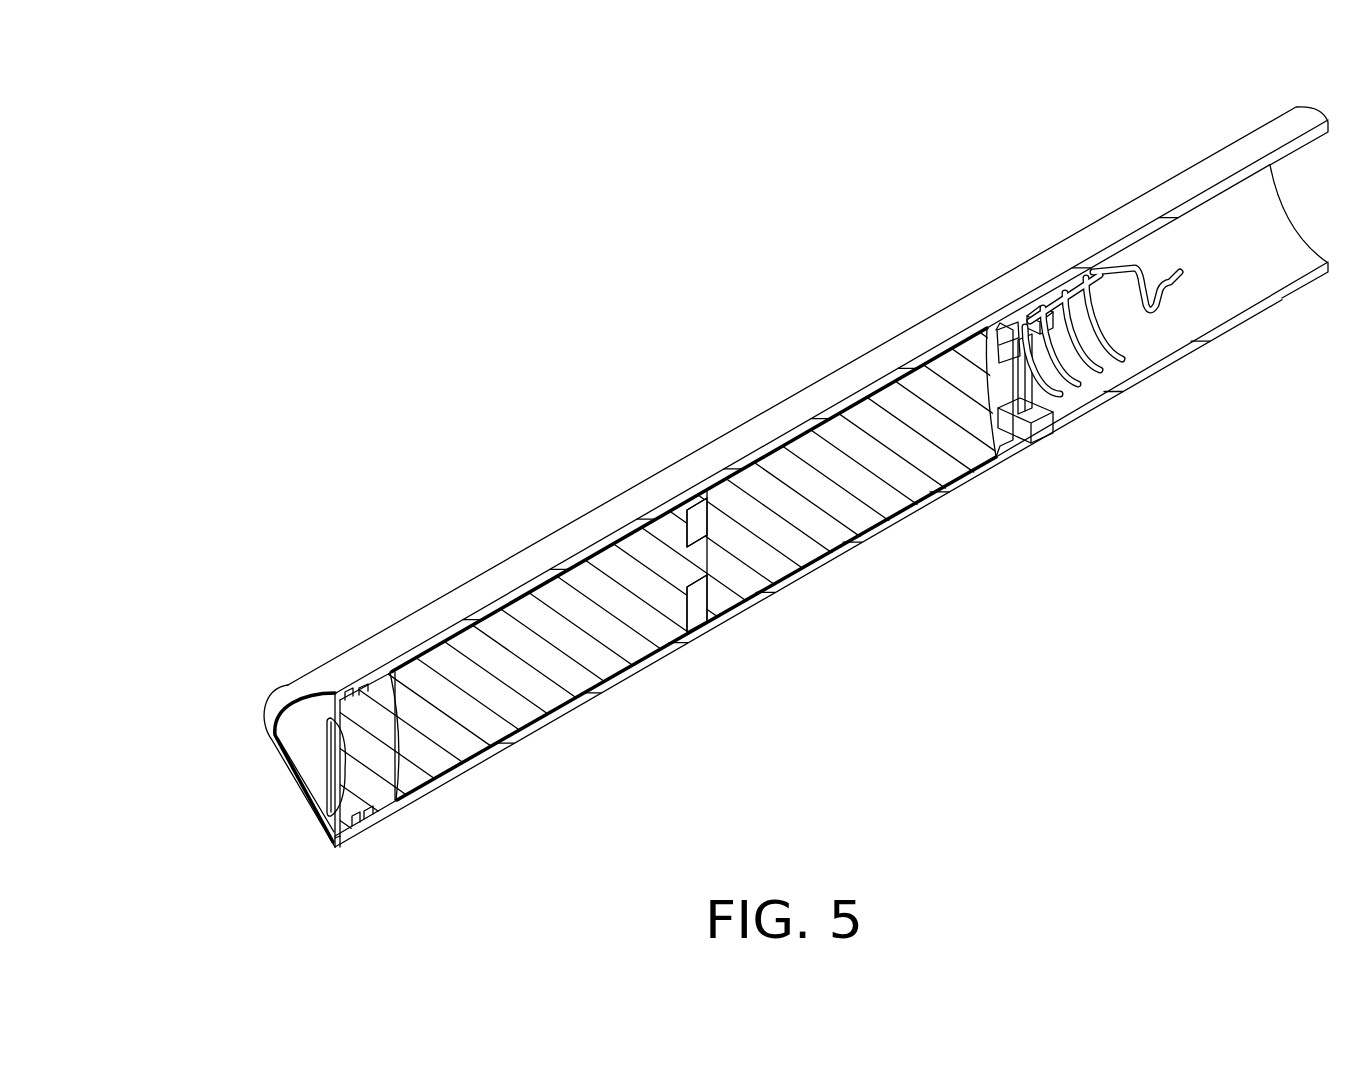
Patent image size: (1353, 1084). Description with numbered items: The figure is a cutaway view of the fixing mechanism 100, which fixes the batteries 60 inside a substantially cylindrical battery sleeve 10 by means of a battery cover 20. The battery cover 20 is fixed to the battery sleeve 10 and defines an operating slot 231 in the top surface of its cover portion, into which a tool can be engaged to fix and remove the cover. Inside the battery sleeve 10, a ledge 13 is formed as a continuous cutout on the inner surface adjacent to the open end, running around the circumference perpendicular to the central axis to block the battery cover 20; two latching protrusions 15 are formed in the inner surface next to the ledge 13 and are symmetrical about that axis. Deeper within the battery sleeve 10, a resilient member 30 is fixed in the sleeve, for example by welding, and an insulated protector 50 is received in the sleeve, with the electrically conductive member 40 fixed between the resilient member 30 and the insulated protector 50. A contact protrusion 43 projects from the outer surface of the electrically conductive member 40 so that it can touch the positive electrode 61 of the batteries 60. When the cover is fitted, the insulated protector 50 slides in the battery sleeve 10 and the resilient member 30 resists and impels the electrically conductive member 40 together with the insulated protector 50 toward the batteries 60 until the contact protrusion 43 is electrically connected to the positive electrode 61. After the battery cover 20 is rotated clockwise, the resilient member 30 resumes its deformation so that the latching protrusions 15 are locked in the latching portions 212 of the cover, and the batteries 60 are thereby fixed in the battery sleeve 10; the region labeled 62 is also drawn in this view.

The fixing mechanism 100 is at (506, 230).
The battery sleeve 10 is at (678, 483).
The ledge 13 is at (336, 843).
The latching protrusions 15 is at (372, 819).
The battery cover 20 is at (295, 742).
The resilient member 30 is at (1048, 290).
The electrically conductive member 40 is at (1030, 410).
The contact protrusion 43 is at (993, 345).
The insulated protector 50 is at (1031, 310).
The batteries 60 is at (812, 520).
The positive electrode 61 is at (1007, 380).
The slot 62 is at (690, 600).
The latching portions 212 is at (357, 820).
The operating slot 231 is at (333, 758).